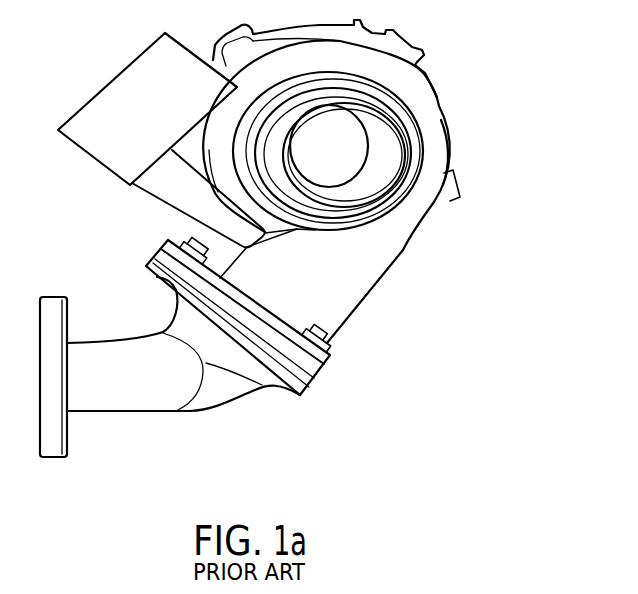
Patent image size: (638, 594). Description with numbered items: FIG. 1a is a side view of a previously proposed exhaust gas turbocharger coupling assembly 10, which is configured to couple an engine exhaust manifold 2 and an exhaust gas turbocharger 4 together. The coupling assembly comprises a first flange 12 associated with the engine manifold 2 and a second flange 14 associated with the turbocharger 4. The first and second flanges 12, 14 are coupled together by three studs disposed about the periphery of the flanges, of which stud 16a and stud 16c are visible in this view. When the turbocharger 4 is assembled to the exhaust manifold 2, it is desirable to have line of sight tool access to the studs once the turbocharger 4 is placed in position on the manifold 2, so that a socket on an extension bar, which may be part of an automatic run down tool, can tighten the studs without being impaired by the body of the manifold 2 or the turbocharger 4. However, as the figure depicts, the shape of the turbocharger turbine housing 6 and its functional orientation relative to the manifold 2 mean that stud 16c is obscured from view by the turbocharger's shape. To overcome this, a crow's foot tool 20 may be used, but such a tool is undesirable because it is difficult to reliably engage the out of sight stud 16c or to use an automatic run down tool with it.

The engine exhaust manifold 2 is at (106, 401).
The exhaust gas turbocharger 4 is at (443, 112).
The turbocharger turbine housing 6 is at (440, 163).
The exhaust gas turbocharger coupling assembly 10 is at (342, 412).
The first flange 12 is at (163, 277).
The second flange 14 is at (313, 370).
The stud 16a is at (327, 343).
The stud 16c is at (197, 233).
The crow's foot tool 20 is at (113, 102).